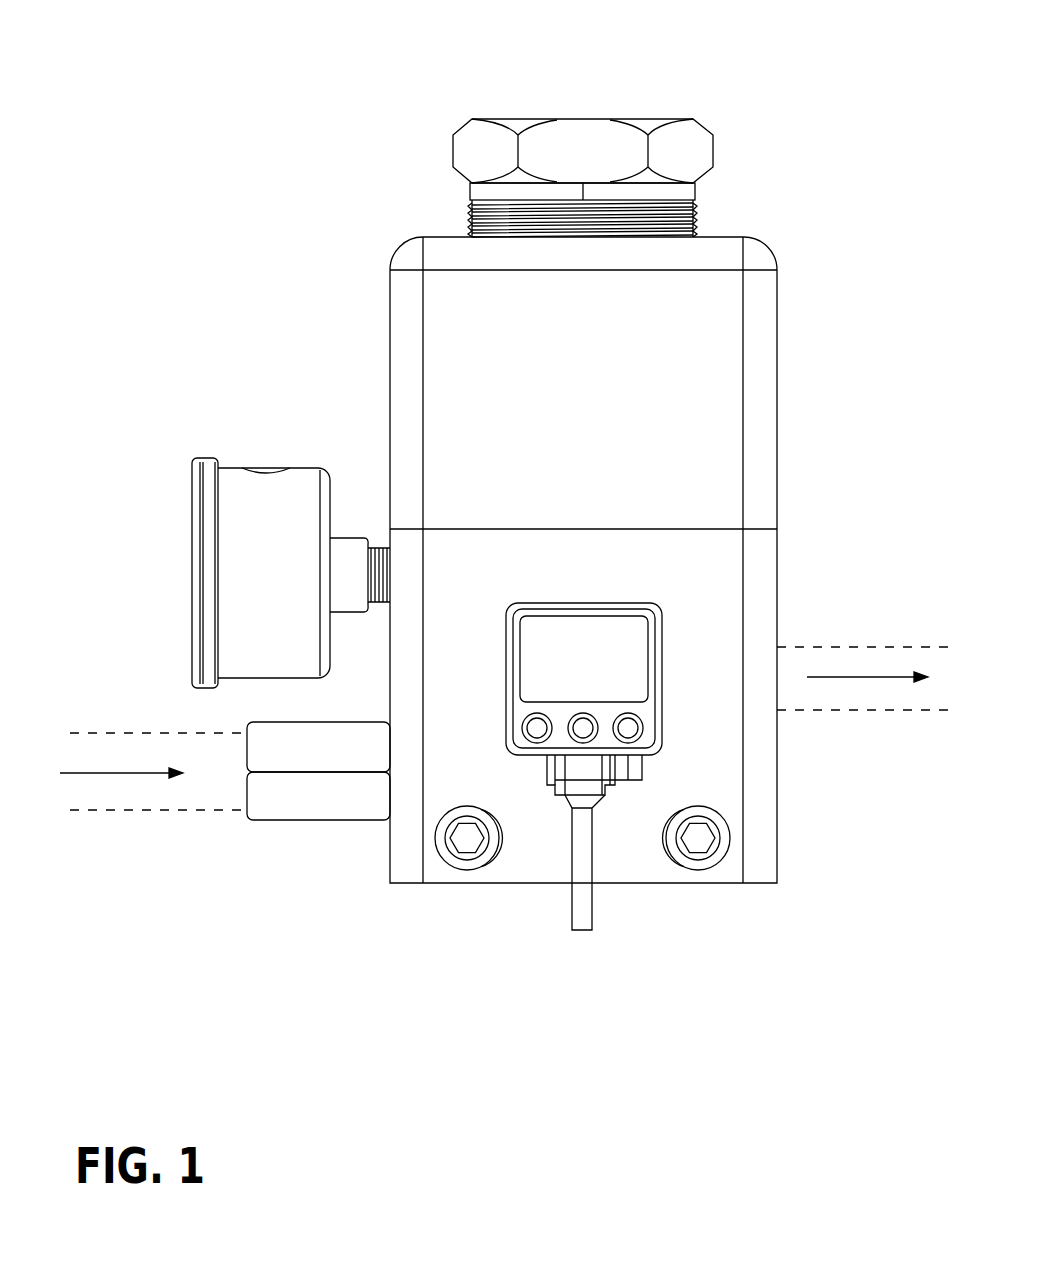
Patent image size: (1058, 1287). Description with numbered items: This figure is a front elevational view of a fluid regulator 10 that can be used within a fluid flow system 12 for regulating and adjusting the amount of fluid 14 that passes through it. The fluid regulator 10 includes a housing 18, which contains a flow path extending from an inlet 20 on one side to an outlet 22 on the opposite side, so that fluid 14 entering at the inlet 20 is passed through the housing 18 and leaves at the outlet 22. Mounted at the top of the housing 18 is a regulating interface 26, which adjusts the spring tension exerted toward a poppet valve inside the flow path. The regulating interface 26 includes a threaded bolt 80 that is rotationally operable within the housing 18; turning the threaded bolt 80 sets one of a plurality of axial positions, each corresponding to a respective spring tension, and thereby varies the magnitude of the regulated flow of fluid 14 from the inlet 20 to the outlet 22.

The fluid regulator 10 is at (855, 228).
The fluid flow system 12 is at (135, 723).
The fluid 14 is at (127, 773).
The housing 18 is at (781, 395).
The inlet 20 is at (363, 824).
The outlet 22 is at (785, 637).
The regulating interface 26 is at (708, 105).
The threaded bolt 80 is at (478, 140).